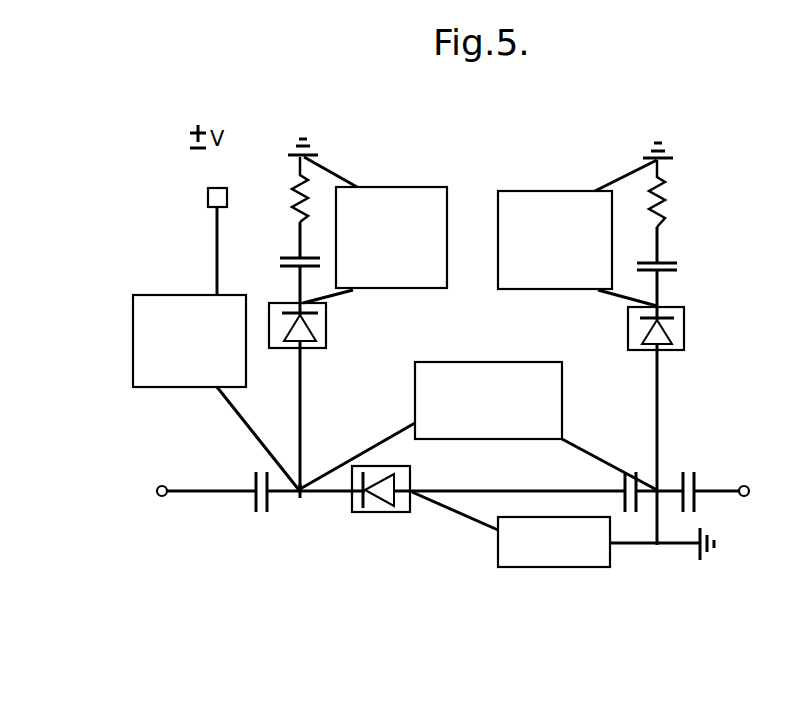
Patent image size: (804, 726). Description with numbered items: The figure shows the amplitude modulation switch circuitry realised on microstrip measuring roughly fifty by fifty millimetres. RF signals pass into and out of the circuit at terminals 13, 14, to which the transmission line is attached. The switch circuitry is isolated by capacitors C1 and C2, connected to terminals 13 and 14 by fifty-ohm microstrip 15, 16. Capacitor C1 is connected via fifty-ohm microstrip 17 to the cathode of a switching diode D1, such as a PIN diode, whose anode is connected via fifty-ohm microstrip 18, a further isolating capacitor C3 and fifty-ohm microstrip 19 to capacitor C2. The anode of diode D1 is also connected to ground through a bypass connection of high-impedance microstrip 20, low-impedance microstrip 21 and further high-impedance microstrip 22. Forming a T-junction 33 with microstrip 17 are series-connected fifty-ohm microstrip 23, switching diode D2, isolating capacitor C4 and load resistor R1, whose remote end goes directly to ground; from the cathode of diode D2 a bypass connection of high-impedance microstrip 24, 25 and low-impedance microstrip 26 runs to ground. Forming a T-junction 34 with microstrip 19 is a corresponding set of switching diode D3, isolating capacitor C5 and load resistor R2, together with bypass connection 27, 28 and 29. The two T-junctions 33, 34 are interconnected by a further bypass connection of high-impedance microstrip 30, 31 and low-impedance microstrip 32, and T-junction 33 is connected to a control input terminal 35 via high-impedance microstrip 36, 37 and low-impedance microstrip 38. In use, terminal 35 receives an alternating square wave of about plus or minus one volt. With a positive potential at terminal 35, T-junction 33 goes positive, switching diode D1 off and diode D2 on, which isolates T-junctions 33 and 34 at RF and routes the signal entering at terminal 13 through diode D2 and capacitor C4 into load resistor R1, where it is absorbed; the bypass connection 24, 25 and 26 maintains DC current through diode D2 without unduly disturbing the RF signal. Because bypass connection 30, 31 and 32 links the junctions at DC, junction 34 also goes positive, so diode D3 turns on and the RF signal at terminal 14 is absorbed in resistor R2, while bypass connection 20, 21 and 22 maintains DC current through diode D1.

The terminal 13 is at (160, 497).
The terminal 14 is at (748, 497).
The 50 Ω microstrip 15 is at (211, 494).
The 50 Ω microstrip 16 is at (720, 494).
The 50 Ω microstrip 17 is at (303, 495).
The 50 Ω microstrip 18 is at (467, 489).
The 50 Ω microstrip 19 is at (656, 548).
The high-impedance microstrip 20 is at (462, 515).
The low-impedance microstrip 21 is at (540, 568).
The high-impedance microstrip 22 is at (636, 546).
The 50 Ω microstrip 23 is at (302, 408).
The high-impedance microstrip 24 is at (354, 290).
The high-impedance microstrip 25 is at (333, 172).
The low-impedance microstrip 26 is at (432, 187).
The bypass connection microstrip 27 is at (610, 292).
The bypass connection microstrip 28 is at (628, 176).
The bypass connection 29 is at (532, 290).
The high-impedance microstrip 30 is at (396, 431).
The high-impedance microstrip 31 is at (597, 459).
The low-impedance microstrip 32 is at (562, 390).
The T-junction 33 is at (291, 495).
The T-junction 34 is at (660, 472).
The control input terminal 35 is at (208, 198).
The high-impedance microstrip 36 is at (240, 416).
The high-impedance microstrip 37 is at (215, 259).
The low-impedance microstrip 38 is at (160, 294).
The isolating capacitor C1 is at (258, 506).
The isolating capacitor C2 is at (693, 480).
The isolating capacitor C3 is at (650, 506).
The isolating capacitor C4 is at (291, 262).
The isolating capacitor C5 is at (666, 267).
The switching diode D1 is at (381, 503).
The switching diode D2 is at (314, 325).
The switching diode D3 is at (672, 328).
The load resistor R1 is at (285, 189).
The load resistor R2 is at (672, 193).